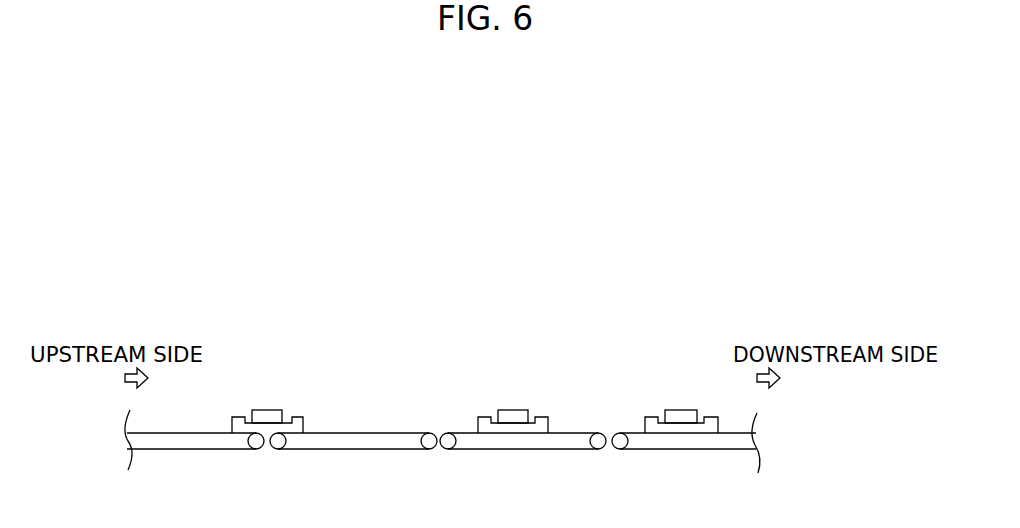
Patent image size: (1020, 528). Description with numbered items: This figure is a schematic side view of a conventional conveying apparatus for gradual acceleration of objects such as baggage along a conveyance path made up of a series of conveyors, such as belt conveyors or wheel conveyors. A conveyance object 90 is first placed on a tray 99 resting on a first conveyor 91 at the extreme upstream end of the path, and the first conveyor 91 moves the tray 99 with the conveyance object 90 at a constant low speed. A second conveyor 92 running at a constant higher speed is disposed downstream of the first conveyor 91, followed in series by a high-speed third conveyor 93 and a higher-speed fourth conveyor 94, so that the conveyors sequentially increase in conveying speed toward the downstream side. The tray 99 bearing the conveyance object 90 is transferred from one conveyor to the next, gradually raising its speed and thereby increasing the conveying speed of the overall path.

The conveyance object 90 is at (260, 410).
The first conveyor 91 is at (185, 441).
The second conveyor 92 is at (342, 441).
The third conveyor 93 is at (517, 441).
The fourth conveyor 94 is at (685, 441).
The tray 99 is at (303, 422).